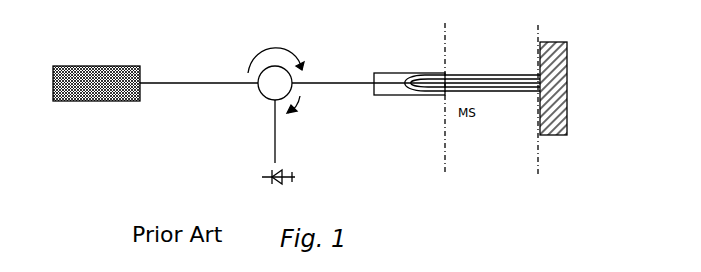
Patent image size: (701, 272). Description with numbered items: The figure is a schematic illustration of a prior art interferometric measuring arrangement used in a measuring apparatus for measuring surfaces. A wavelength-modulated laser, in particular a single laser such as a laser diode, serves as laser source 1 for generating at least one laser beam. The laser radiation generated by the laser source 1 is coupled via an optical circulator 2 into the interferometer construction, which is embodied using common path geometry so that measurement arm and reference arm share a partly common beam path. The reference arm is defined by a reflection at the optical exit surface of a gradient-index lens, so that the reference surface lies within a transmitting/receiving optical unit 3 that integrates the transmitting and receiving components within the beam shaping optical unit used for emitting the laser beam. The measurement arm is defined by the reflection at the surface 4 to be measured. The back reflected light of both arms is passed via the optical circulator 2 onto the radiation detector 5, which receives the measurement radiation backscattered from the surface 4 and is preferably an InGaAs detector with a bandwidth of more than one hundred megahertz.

The laser source 1 is at (73, 89).
The optical circulator 2 is at (268, 83).
The transmitting/receiving optical unit 3 is at (395, 73).
The surface 4 is at (550, 130).
The radiation detector 5 is at (280, 168).